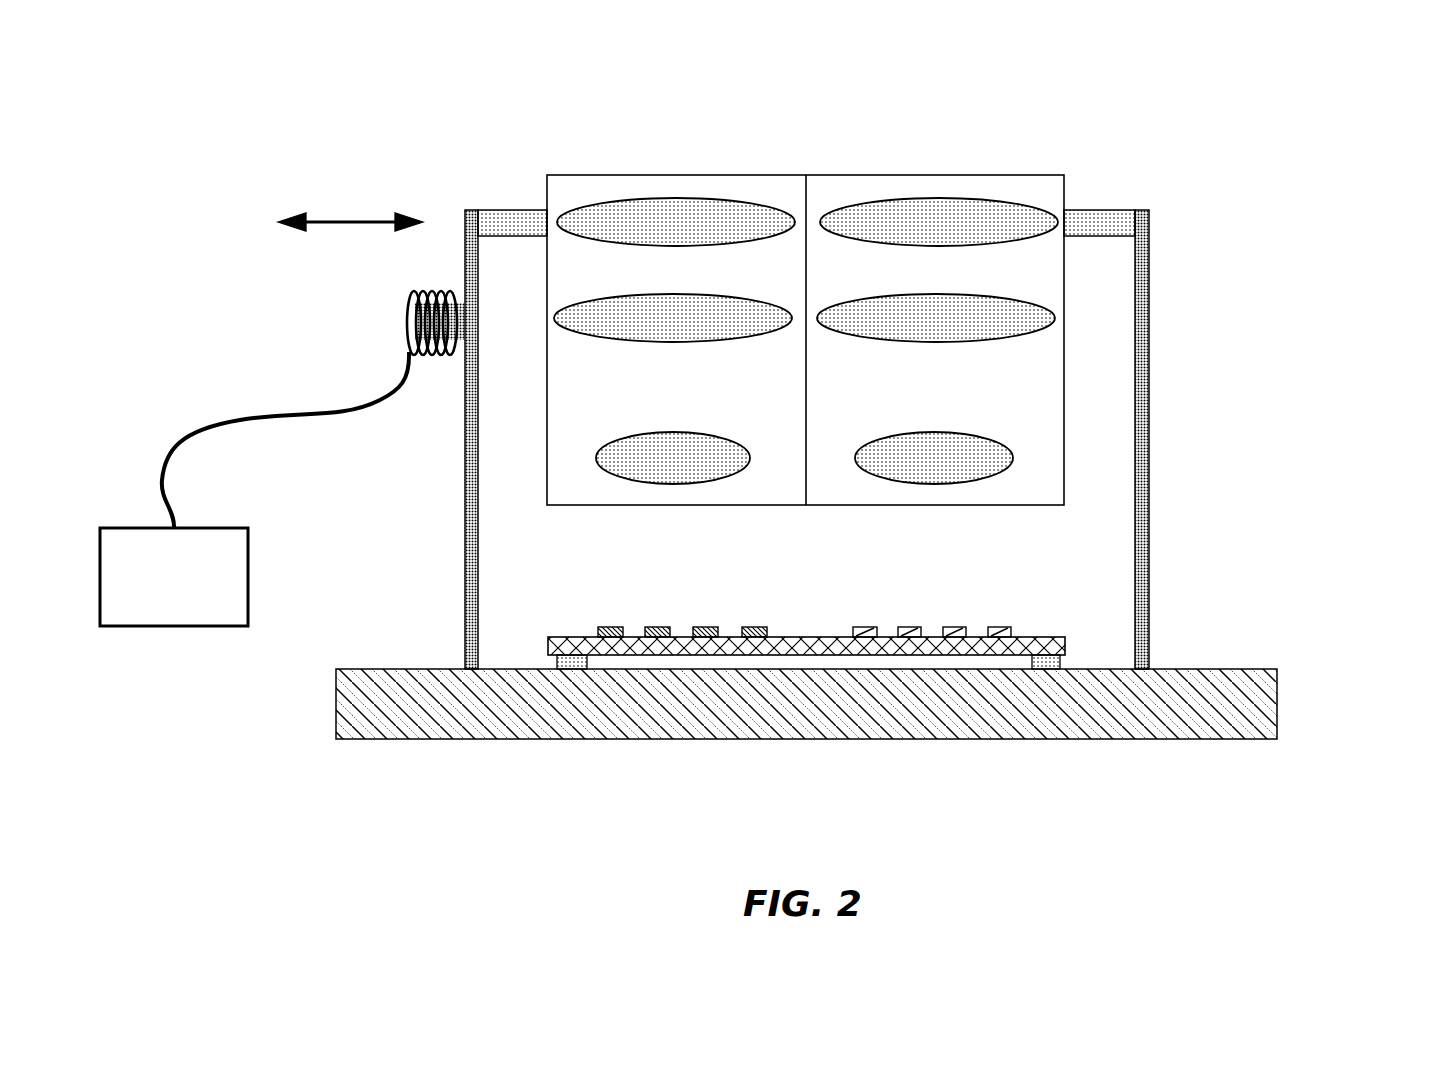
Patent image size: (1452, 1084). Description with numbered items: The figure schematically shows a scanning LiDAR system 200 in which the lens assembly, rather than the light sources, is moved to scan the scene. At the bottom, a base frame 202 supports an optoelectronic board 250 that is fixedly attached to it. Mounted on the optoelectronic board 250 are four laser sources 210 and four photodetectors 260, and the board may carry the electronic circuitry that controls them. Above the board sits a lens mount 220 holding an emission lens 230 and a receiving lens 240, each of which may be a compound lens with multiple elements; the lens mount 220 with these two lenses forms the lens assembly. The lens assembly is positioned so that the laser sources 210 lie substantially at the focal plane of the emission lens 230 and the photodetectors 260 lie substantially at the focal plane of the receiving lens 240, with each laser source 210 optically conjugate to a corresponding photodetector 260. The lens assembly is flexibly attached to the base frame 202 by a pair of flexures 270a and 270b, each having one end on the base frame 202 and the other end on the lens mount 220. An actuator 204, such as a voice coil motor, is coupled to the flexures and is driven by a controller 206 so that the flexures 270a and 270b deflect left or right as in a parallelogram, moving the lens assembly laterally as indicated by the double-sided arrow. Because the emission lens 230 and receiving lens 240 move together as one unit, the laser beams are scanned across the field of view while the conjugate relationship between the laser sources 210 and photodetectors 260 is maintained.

The scanning LiDAR system 200 is at (374, 108).
The base frame 202 is at (1237, 703).
The actuator 204 is at (407, 299).
The controller 206 is at (183, 627).
The laser sources 210 is at (866, 627).
The lens mount 220 is at (1043, 175).
The emission lens 230 is at (940, 220).
The receiving lens 240 is at (676, 220).
The optoelectronic board 250 is at (1065, 647).
The photodetectors 260 is at (612, 627).
The flexure 270a is at (1149, 455).
The flexure 270b is at (465, 469).